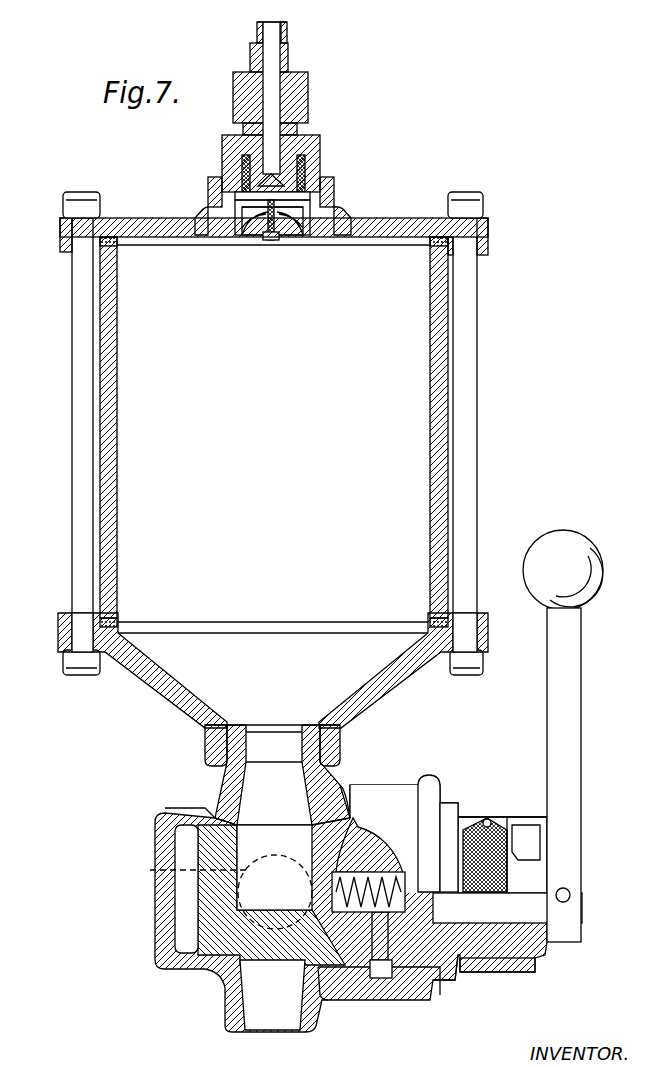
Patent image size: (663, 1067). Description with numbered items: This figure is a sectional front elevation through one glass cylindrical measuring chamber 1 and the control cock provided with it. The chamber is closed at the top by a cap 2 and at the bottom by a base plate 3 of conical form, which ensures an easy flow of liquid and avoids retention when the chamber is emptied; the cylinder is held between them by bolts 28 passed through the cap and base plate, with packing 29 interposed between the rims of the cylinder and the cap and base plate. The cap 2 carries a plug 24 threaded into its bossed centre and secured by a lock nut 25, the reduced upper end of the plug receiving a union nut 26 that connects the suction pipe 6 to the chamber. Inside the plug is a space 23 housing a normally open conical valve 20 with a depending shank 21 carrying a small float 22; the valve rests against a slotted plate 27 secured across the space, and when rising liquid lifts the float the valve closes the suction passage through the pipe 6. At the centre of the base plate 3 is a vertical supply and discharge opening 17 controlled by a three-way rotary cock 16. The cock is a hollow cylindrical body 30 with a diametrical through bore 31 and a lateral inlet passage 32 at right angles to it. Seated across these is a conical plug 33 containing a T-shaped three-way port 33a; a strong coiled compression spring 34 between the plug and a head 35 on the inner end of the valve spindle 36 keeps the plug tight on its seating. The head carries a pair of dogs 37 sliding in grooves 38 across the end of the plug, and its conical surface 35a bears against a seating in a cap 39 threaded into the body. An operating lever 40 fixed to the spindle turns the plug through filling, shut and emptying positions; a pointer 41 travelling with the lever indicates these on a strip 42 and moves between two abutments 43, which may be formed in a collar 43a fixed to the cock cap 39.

The measuring chamber 1 is at (447, 383).
The cap 2 is at (392, 222).
The base plate 3 is at (398, 703).
The pipe 6 is at (281, 60).
The three-way rotary cock 16 is at (390, 787).
The supply and discharge opening 17 is at (285, 745).
The valve 20 is at (320, 160).
The shank 21 is at (312, 203).
The float 22 is at (273, 240).
The space 23 is at (250, 238).
The plug 24 is at (222, 150).
The lock nut 25 is at (335, 190).
The union nut 26 is at (308, 85).
The plate 27 is at (203, 204).
The bolts 28 is at (82, 378).
The packing 29 is at (110, 236).
The hollow cylindrical body 30 is at (182, 927).
The through bore 31 is at (218, 766).
The inlet passage 32 is at (150, 871).
The conical plug 33 is at (286, 950).
The three-way port 33a is at (248, 800).
The coiled compression spring 34 is at (383, 868).
The head 35 is at (400, 1002).
The conical surface 35a is at (442, 976).
The valve spindle 36 is at (497, 958).
The dogs 37 is at (362, 846).
The grooves 38 is at (348, 784).
The cap 39 is at (458, 812).
The operating lever 40 is at (581, 694).
The pointer 41 is at (541, 835).
The strip 42 is at (489, 820).
The abutments 43 is at (512, 825).
The collar 43a is at (536, 965).